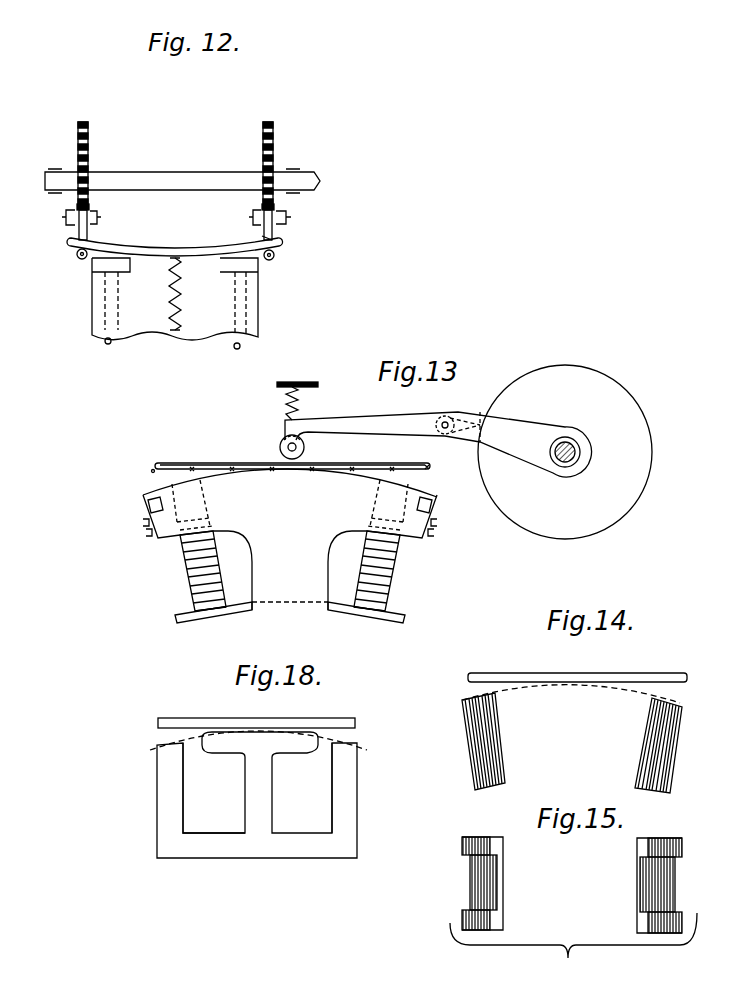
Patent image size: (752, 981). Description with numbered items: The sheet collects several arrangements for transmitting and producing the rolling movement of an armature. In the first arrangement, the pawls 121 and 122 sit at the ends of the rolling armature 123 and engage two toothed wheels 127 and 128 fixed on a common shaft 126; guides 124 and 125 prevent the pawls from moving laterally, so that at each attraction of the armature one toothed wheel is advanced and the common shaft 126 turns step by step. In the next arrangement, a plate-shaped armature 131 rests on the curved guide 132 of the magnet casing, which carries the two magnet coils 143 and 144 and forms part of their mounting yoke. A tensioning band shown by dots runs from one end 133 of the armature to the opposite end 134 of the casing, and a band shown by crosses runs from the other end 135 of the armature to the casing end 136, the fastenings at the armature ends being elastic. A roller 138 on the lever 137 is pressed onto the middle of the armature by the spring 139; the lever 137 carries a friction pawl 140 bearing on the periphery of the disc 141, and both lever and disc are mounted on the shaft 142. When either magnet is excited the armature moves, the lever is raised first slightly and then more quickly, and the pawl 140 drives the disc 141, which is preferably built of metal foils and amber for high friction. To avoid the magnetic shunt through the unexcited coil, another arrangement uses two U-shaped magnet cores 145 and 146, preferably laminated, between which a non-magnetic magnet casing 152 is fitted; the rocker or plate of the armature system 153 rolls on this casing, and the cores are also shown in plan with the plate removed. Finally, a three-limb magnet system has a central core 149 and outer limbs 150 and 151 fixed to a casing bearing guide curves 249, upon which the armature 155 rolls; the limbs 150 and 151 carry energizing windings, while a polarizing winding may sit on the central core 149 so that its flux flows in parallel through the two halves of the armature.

In FIG. 12, the pawl 121 is at (84, 233).
In FIG. 12, the pawl 122 is at (271, 237).
In FIG. 12, the armature 123 is at (165, 257).
In FIG. 12, the guide 124 is at (99, 217).
In FIG. 12, the guide 125 is at (291, 217).
In FIG. 12, the common shaft 126 is at (163, 183).
In FIG. 12, the toothed wheel 127 is at (88, 137).
In FIG. 12, the toothed wheel 128 is at (263, 138).
In FIG. 13, the armature 131 is at (210, 464).
In FIG. 13, the curved guide 132 is at (265, 478).
In FIG. 13, the end of the armature 133 is at (160, 464).
In FIG. 13, the end of the magnet casing 134 is at (442, 530).
In FIG. 13, the end of the armature 135 is at (431, 467).
In FIG. 13, the end of the magnet casing 136 is at (142, 524).
In FIG. 13, the lever 137 is at (407, 420).
In FIG. 13, the roller 138 is at (305, 447).
In FIG. 13, the spring 139 is at (300, 402).
In FIG. 13, the friction pawl 140 is at (479, 410).
In FIG. 13, the disc 141 is at (605, 380).
In FIG. 13, the shaft 142 is at (564, 442).
In FIG. 13, the magnet coil 143 is at (184, 577).
In FIG. 13, the magnet coil 144 is at (397, 577).
In FIG. 14, the magnet core 145 is at (468, 740).
In FIG. 15, the magnet core 145 is at (462, 882).
In FIG. 14, the magnet core 146 is at (640, 755).
In FIG. 15, the magnet core 146 is at (637, 914).
In FIG. 18, the central core 149 is at (272, 787).
In FIG. 18, the limb 150 is at (183, 787).
In FIG. 18, the limb 151 is at (357, 790).
In FIG. 14, the magnet casing 152 is at (599, 688).
In FIG. 14, the armature system plate 153 is at (523, 676).
In FIG. 18, the armature 155 is at (297, 725).
In FIG. 18, the guide curves 249 is at (350, 746).